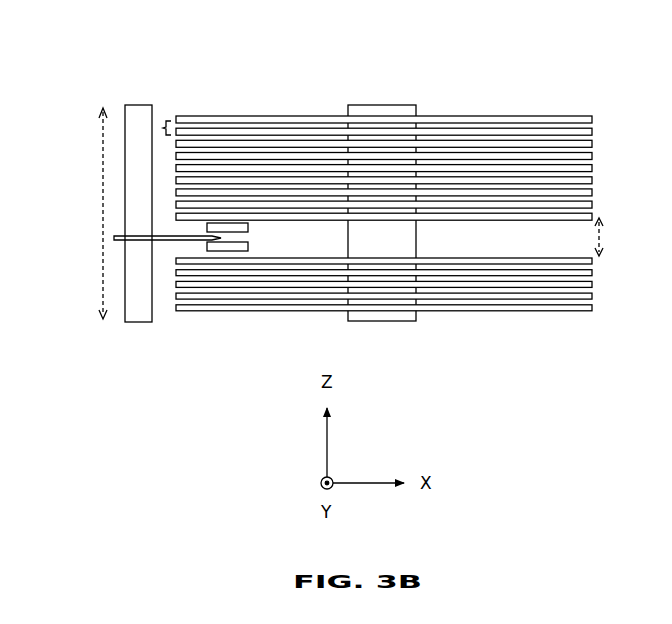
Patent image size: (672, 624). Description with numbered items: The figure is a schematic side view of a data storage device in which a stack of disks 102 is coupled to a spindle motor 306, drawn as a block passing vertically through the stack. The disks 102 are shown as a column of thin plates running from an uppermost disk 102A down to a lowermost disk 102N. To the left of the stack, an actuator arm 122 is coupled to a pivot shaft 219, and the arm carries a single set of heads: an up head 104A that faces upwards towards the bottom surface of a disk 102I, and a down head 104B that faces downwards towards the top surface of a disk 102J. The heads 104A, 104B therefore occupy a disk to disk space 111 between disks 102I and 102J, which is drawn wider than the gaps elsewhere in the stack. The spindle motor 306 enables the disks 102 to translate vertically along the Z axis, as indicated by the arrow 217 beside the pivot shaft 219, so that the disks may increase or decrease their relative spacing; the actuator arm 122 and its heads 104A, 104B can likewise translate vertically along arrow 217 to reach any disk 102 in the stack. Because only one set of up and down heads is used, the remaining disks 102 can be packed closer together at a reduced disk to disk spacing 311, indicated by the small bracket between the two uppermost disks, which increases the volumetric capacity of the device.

The disks 102 is at (421, 163).
The disk 102A is at (594, 120).
The disk 102I is at (594, 216).
The disk 102J is at (594, 260).
The disk 102N is at (594, 307).
The up head 104A is at (237, 222).
The down head 104B is at (230, 252).
The disk to disk space 111 is at (603, 236).
The actuator arm 122 is at (112, 238).
The arrow 217 is at (103, 139).
The pivot shaft 219 is at (140, 105).
The spindle motor 306 is at (367, 105).
The disk to disk spacing 311 is at (163, 128).